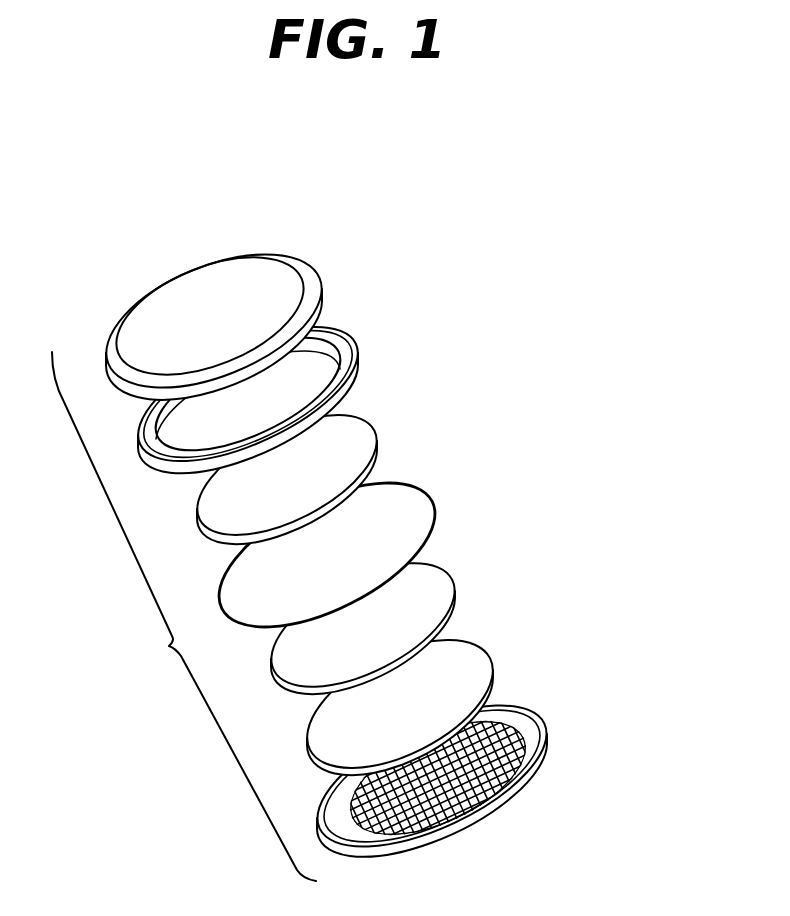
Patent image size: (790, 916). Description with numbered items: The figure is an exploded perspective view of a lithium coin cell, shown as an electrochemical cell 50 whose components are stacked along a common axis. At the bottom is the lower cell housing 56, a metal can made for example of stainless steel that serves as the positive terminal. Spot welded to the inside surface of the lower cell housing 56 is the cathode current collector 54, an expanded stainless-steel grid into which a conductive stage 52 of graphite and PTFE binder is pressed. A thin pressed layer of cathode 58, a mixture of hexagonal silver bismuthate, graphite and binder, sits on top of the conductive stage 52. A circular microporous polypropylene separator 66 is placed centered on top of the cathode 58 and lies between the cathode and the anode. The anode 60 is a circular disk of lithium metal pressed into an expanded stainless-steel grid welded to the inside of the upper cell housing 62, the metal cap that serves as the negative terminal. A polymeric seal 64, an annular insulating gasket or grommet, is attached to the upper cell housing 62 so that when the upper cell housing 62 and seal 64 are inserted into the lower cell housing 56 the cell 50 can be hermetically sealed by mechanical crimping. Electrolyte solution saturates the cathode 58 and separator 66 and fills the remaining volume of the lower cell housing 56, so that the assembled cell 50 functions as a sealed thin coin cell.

The electrochemical cell 50 is at (184, 616).
The conductive stage 52 is at (475, 660).
The cathode current collector 54 is at (488, 763).
The lower cell housing 56 is at (533, 723).
The cathode 58 is at (437, 593).
The anode 60 is at (356, 446).
The upper cell housing 62 is at (292, 278).
The seal 64 is at (355, 367).
The separator 66 is at (423, 507).